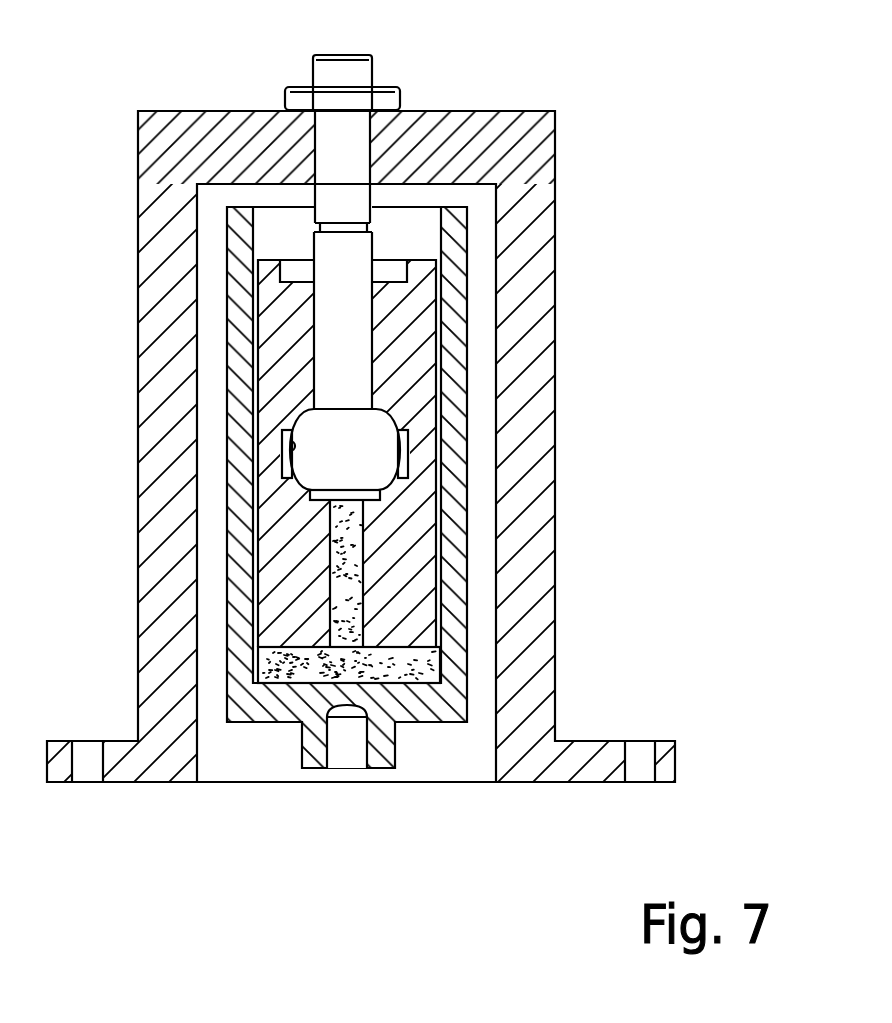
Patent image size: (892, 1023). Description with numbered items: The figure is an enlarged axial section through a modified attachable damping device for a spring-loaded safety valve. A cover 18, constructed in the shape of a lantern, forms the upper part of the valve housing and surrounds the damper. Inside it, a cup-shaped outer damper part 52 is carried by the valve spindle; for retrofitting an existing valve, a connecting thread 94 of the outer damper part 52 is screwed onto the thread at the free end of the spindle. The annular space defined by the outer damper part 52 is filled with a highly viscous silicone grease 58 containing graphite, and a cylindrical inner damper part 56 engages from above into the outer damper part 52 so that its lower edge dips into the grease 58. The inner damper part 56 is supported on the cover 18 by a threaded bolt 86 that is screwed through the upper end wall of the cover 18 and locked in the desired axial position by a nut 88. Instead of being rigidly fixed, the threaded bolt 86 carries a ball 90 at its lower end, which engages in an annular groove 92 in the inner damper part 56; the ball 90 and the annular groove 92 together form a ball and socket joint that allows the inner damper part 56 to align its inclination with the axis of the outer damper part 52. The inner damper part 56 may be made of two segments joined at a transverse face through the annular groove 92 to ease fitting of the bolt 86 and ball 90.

The cover 18 is at (533, 377).
The outer damper part 52 is at (468, 413).
The inner damper part 56 is at (398, 546).
The silicone grease 58 is at (430, 672).
The threaded bolt 86 is at (357, 258).
The nut 88 is at (401, 100).
The ball 90 is at (408, 457).
The annular groove 92 is at (292, 462).
The connecting thread 94 is at (326, 753).